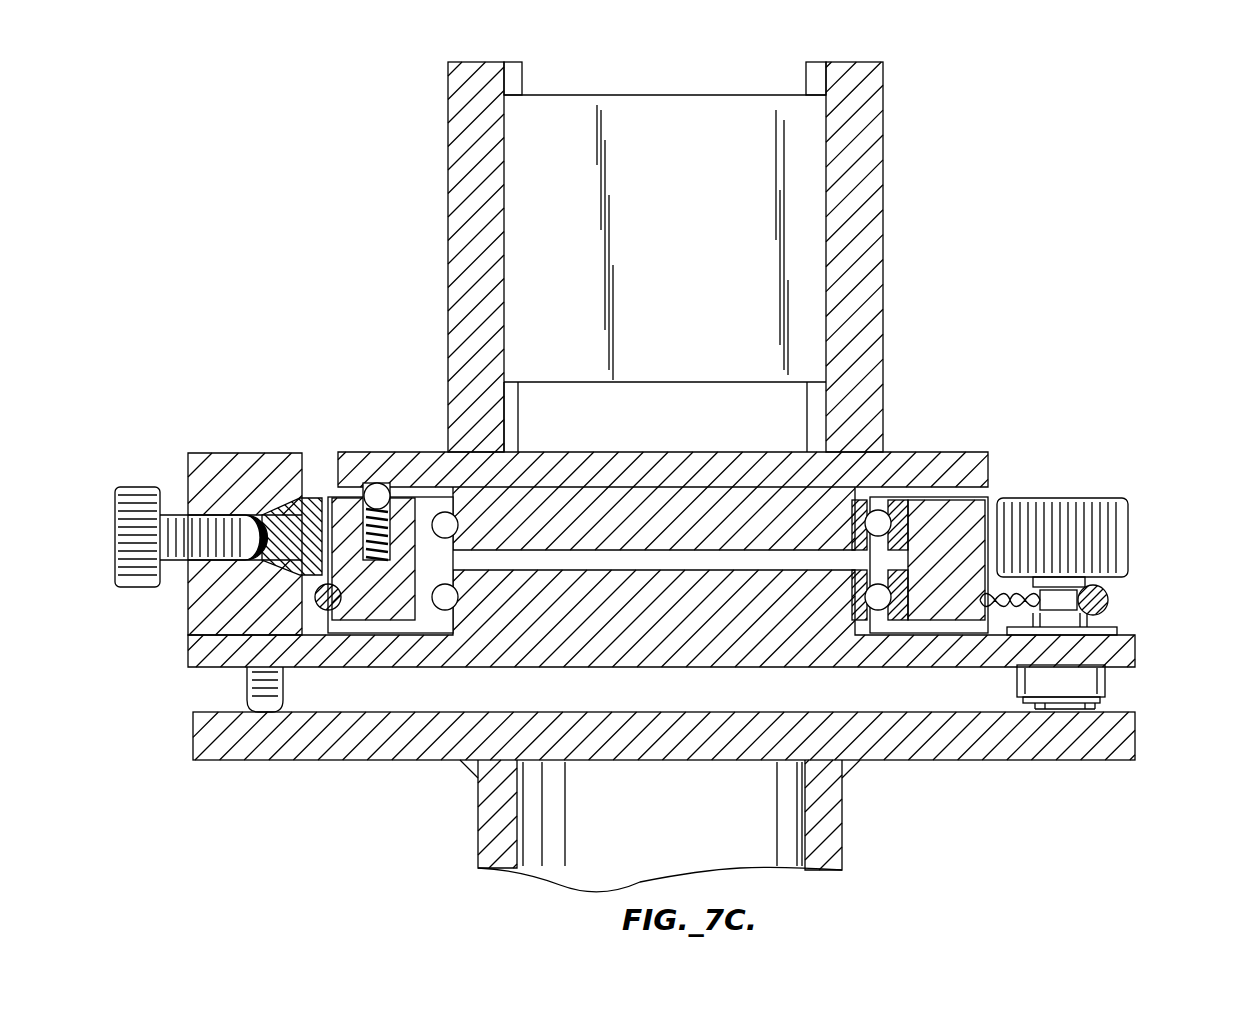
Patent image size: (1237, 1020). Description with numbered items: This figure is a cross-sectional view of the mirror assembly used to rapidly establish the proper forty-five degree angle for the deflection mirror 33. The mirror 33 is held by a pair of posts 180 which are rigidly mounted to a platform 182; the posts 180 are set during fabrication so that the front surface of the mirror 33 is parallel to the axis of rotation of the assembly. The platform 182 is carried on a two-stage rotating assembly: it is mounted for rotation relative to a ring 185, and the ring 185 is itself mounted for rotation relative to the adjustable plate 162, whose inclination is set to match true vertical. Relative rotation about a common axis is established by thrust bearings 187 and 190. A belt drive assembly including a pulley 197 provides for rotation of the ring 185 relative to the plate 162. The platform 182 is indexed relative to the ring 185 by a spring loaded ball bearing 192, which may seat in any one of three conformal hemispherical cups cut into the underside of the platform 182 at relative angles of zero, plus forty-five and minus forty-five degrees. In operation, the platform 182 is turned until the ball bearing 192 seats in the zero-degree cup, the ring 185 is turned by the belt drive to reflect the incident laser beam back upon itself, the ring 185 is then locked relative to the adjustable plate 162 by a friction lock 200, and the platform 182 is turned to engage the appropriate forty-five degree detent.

The posts 180 is at (470, 73).
The mirror 33 is at (660, 120).
The platform 182 is at (923, 470).
The adjustable plate 162 is at (1140, 652).
The friction lock 200 is at (313, 497).
The spring loaded ball bearing 192 is at (377, 486).
The thrust bearing 187 is at (860, 500).
The thrust bearing 190 is at (882, 607).
The ring 185 is at (988, 497).
The pulley 197 is at (1097, 585).